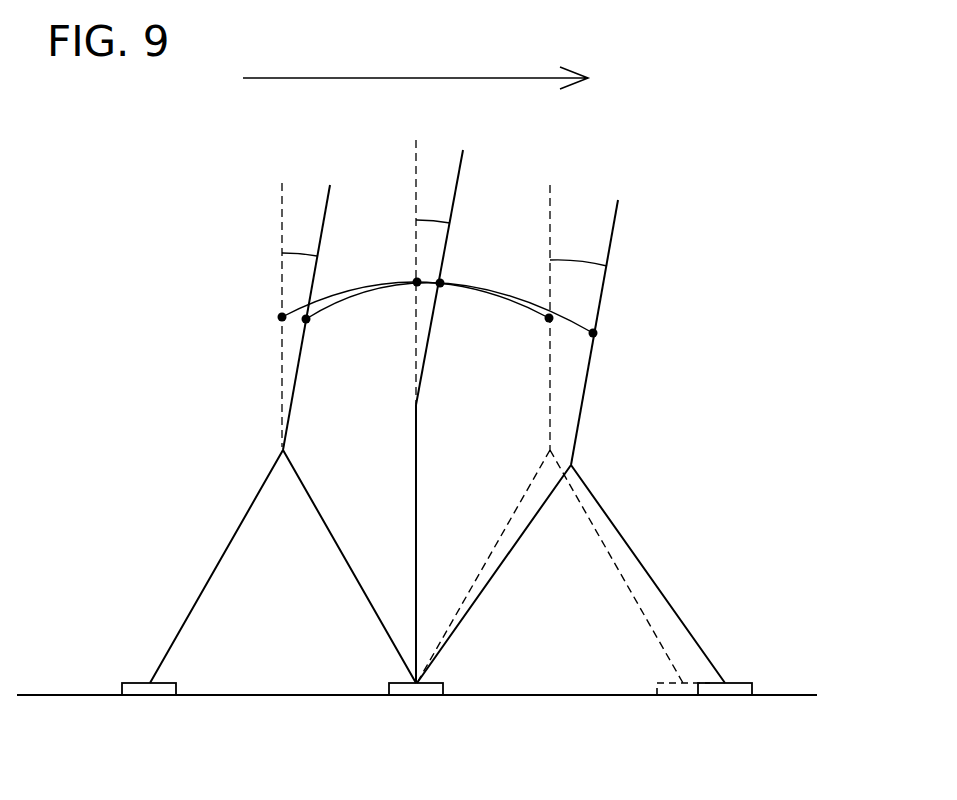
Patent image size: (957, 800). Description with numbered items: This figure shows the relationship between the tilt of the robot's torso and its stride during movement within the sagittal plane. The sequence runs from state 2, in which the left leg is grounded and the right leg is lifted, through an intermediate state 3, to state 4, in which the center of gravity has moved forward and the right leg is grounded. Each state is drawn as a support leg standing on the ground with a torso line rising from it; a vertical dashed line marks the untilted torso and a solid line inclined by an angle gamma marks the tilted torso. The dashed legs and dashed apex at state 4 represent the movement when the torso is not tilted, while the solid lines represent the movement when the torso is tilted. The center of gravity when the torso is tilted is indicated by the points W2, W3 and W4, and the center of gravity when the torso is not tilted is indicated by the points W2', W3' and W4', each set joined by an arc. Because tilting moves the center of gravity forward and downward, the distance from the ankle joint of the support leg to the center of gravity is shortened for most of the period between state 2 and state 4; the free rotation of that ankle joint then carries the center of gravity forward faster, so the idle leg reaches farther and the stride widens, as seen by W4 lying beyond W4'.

The state 2 is at (283, 414).
The state 3 is at (449, 397).
The state 4 is at (571, 424).
The center of gravity when the torso is tilted W2 is at (329, 330).
The center of gravity when the torso is not tilted W2' is at (262, 315).
The center of gravity when the torso is tilted W3 is at (459, 298).
The center of gravity when the torso is not tilted W3' is at (397, 271).
The center of gravity when the torso is tilted W4 is at (618, 340).
The center of gravity when the torso is not tilted W4' is at (529, 297).